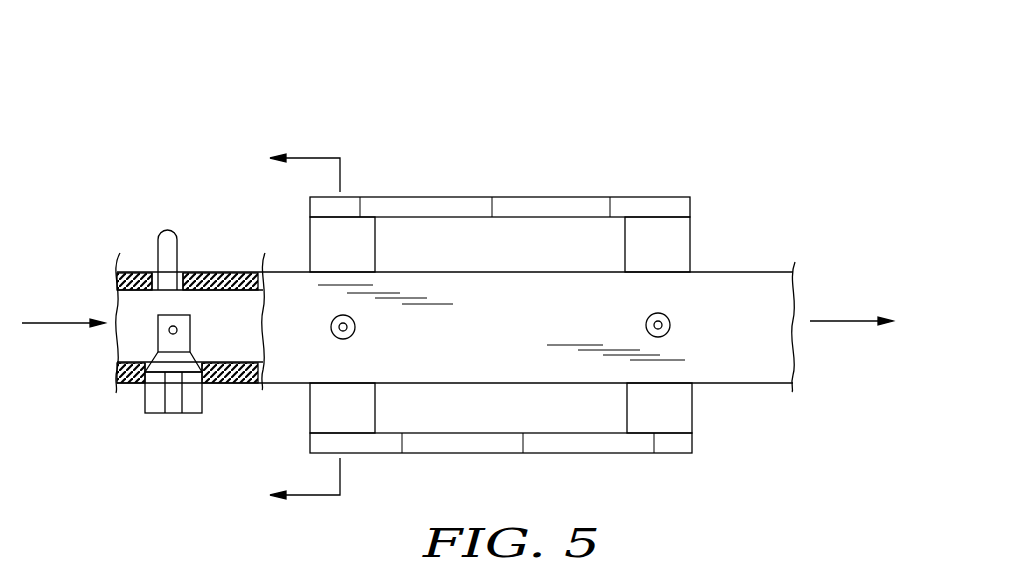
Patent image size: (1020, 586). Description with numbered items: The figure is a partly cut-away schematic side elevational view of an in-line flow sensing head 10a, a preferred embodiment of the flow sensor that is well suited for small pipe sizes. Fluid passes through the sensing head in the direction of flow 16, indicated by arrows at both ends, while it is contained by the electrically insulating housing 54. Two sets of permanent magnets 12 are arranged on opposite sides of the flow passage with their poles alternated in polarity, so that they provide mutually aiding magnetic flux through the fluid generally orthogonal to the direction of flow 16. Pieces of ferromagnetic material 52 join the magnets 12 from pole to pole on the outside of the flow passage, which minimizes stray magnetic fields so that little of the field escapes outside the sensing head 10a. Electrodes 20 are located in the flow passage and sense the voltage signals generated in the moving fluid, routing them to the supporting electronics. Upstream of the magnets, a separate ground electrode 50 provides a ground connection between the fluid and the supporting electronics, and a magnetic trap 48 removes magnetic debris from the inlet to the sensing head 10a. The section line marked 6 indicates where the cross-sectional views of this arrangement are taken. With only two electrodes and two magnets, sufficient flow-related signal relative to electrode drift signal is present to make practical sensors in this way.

The sensing head 10a is at (572, 277).
The magnet 12 is at (370, 410).
The direction of flow 16 is at (47, 323).
The electrode 20 is at (355, 325).
The magnetic trap 48 is at (173, 413).
The ground electrode 50 is at (178, 252).
The pieces of ferromagnetic material 52 is at (512, 203).
The electrically insulating housing 54 is at (735, 272).
The section line 6- 6 is at (305, 328).